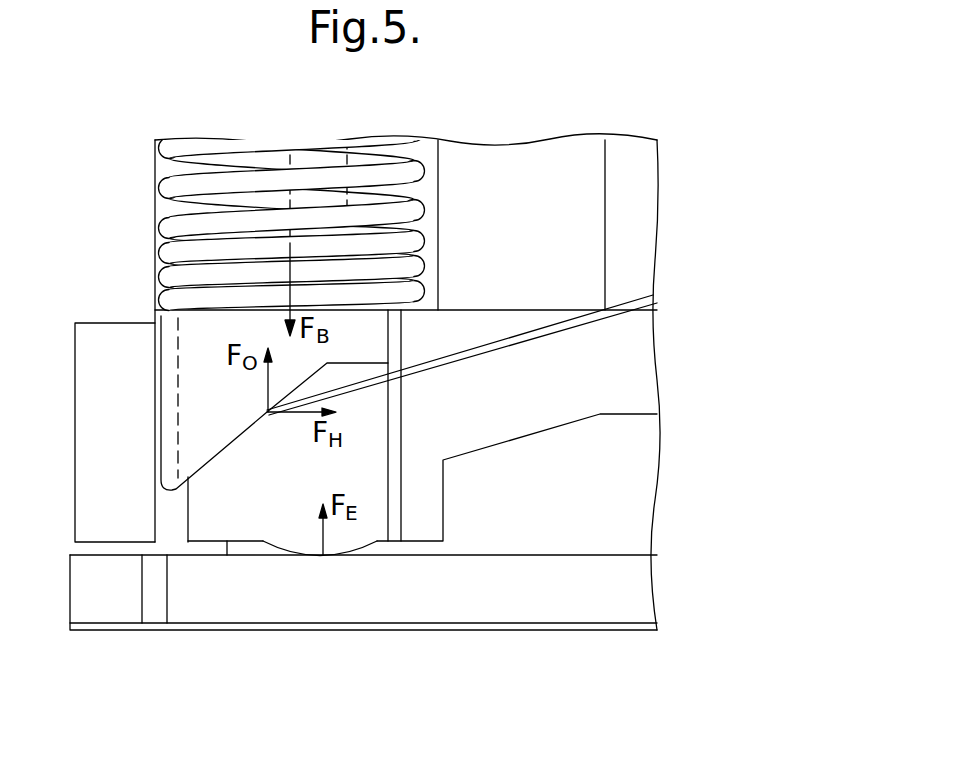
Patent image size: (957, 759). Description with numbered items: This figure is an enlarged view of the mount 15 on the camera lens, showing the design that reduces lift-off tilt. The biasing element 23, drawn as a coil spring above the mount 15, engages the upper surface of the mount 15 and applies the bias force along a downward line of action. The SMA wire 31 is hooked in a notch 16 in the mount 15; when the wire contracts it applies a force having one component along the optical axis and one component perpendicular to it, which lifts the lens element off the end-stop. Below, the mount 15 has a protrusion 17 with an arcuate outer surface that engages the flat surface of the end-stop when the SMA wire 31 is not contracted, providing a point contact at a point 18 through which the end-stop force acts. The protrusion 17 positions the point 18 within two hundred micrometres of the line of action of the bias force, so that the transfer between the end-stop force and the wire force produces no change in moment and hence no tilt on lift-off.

The mount 15 is at (165, 382).
The notch 16 is at (265, 411).
The protrusion 17 is at (300, 547).
The point 18 is at (323, 556).
The biasing element 23 is at (163, 253).
The SMA wire 31 is at (574, 323).